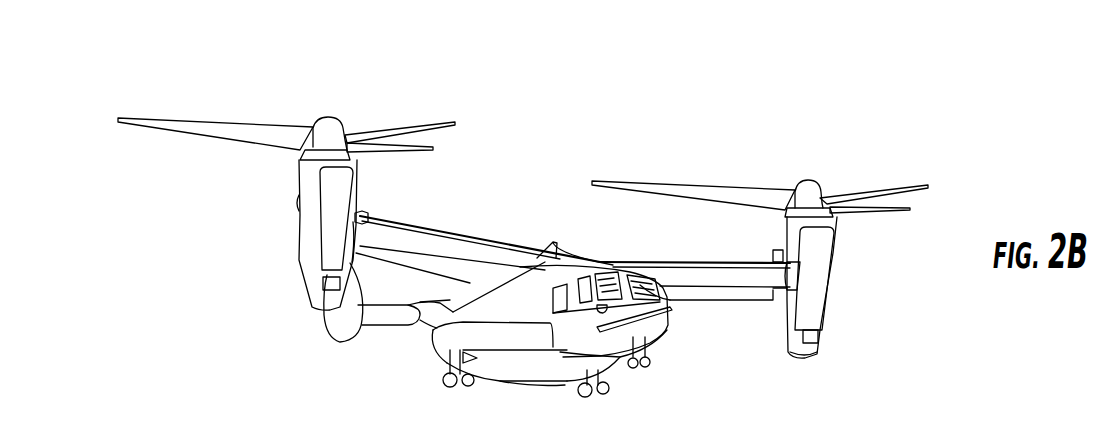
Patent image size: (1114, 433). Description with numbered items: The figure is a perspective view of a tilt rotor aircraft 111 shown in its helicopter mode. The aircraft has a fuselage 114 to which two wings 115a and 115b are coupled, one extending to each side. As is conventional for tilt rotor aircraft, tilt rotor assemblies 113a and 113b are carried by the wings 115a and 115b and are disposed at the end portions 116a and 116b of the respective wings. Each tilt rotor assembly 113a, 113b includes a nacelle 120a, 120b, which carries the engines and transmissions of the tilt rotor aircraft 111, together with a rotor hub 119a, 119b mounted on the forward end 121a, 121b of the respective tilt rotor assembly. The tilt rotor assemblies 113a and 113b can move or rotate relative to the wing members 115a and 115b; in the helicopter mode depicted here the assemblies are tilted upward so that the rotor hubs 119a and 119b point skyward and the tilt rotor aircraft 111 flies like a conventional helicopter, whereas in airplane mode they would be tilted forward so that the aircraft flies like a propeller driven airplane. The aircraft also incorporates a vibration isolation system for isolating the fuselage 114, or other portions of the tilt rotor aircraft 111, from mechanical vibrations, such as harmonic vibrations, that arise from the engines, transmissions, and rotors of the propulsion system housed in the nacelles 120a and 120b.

The tilt rotor aircraft 111 is at (407, 355).
The tilt rotor assembly 113a is at (838, 288).
The tilt rotor assembly 113b is at (288, 248).
The fuselage 114 is at (547, 378).
The wing 115a is at (695, 262).
The wing 115b is at (440, 230).
The end portion of wing 116a is at (772, 318).
The end portion of wing 116b is at (377, 203).
The rotor hub 119a is at (833, 187).
The rotor hub 119b is at (322, 127).
The nacelle 120a is at (820, 345).
The nacelle 120b is at (307, 300).
The forward end of tilt rotor assembly 121a is at (833, 223).
The forward end of tilt rotor assembly 121b is at (299, 163).